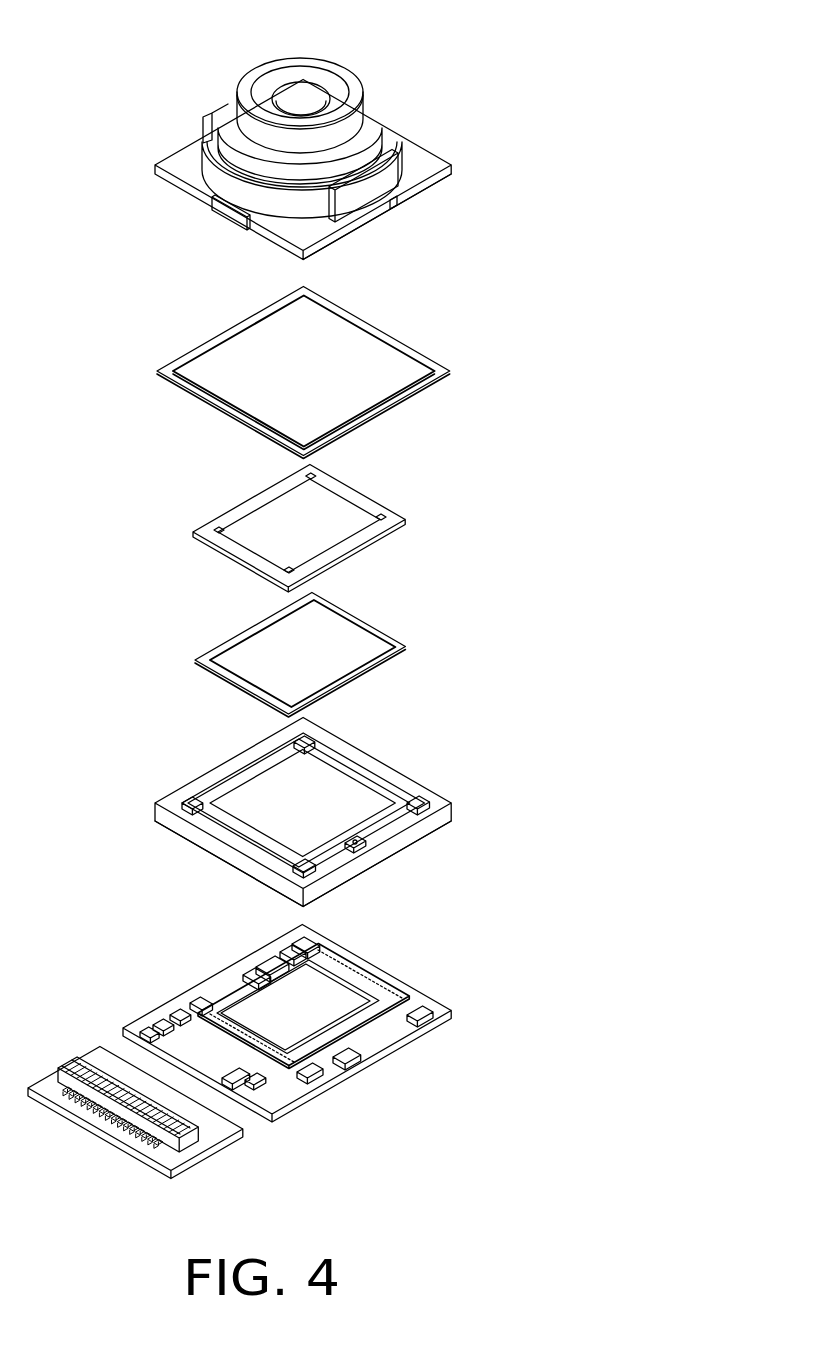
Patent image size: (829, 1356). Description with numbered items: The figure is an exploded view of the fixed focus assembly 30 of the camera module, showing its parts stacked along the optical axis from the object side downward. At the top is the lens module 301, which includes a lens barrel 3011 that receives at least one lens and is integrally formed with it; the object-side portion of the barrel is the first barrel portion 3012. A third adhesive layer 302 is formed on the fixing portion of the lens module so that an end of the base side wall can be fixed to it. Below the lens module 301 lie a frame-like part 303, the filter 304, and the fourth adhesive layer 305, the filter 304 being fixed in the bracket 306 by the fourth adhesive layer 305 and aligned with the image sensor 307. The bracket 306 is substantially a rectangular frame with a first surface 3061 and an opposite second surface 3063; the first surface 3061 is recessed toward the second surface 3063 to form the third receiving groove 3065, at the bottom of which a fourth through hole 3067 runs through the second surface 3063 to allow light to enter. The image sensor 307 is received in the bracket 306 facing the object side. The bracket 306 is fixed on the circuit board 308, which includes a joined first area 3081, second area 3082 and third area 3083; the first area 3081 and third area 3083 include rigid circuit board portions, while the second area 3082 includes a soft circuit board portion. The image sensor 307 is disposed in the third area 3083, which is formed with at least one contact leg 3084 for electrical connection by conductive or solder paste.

The fixed focus assembly 30 is at (131, 46).
The lens module 301 is at (363, 121).
The lens barrel 3011 is at (357, 120).
The first barrel portion 3012 is at (348, 228).
The third adhesive layer 302 is at (423, 167).
The frame 303 is at (440, 362).
The filter 304 is at (398, 515).
The fourth adhesive layer 305 is at (398, 643).
The bracket 306 is at (338, 812).
The first surface 3061 is at (242, 758).
The second surface 3063 is at (383, 867).
The third receiving groove 3065 is at (342, 763).
The fourth through hole 3067 is at (350, 810).
The image sensor 307 is at (347, 987).
The circuit board 308 is at (262, 1052).
The first area 3081 is at (203, 1113).
The second area 3082 is at (223, 1102).
The third area 3083 is at (335, 1011).
The contact leg 3084 is at (143, 1020).